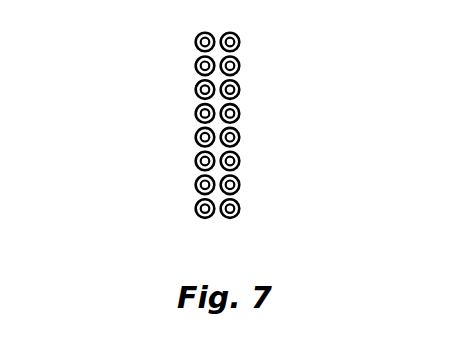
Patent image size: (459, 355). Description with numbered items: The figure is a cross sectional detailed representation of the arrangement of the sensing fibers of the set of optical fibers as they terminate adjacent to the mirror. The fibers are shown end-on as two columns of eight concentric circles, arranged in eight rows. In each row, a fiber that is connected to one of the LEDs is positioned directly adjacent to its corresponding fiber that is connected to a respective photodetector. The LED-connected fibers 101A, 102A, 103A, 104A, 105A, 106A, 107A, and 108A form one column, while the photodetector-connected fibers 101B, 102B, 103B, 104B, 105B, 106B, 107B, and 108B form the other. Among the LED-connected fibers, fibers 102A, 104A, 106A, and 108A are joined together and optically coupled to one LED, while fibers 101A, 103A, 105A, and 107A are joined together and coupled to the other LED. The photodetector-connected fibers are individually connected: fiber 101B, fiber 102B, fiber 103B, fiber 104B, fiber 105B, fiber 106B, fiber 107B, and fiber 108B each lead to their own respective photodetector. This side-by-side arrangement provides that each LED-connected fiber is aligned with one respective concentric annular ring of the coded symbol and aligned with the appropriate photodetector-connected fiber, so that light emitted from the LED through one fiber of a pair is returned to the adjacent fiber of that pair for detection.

The fiber 101B is at (194, 42).
The fiber 101A is at (241, 42).
The fiber 102B is at (194, 66).
The fiber 102A is at (241, 66).
The fiber 103B is at (194, 90).
The fiber 103A is at (241, 90).
The fiber 104B is at (194, 113).
The fiber 104A is at (241, 113).
The fiber 105B is at (194, 137).
The fiber 105A is at (241, 137).
The fiber 106B is at (194, 161).
The fiber 106A is at (241, 161).
The fiber 107B is at (194, 185).
The fiber 107A is at (241, 185).
The fiber 108B is at (194, 209).
The fiber 108A is at (241, 209).